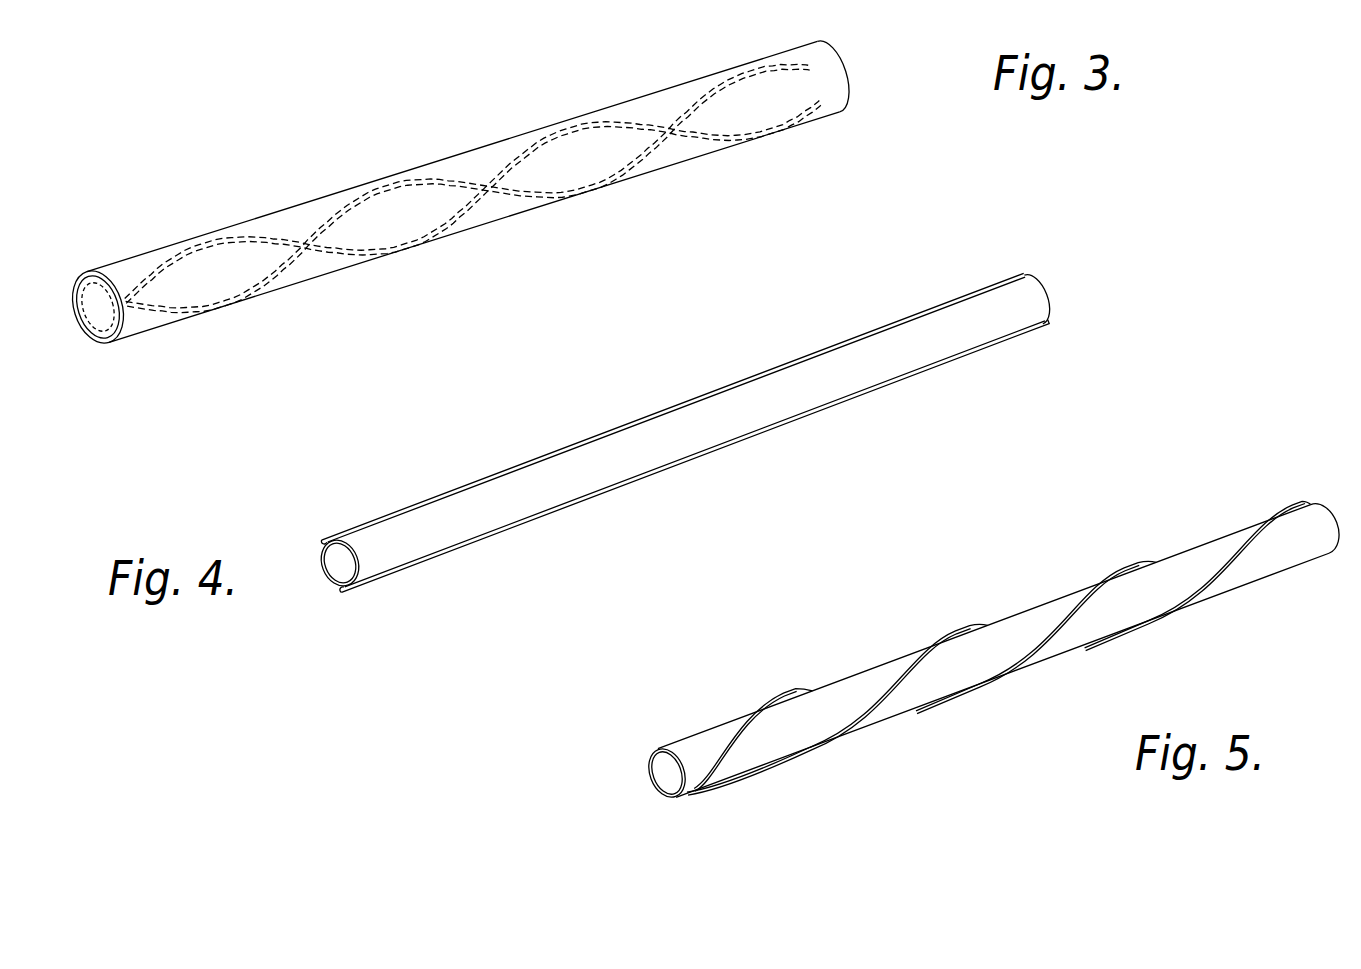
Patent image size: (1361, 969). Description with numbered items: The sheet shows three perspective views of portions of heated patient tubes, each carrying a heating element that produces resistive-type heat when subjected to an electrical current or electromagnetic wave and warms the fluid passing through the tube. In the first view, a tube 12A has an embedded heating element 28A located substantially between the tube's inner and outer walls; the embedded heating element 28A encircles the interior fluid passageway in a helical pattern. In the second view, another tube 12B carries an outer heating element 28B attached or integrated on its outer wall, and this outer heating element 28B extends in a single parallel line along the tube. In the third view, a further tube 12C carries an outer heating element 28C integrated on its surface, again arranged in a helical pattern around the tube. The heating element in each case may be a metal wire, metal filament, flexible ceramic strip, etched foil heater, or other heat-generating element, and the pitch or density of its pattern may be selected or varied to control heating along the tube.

In FIG. 3, the tube 12A is at (322, 150).
In FIG. 3, the embedded heating element 28A is at (557, 140).
In FIG. 4, the tube 12B is at (640, 397).
In FIG. 4, the outer heating element 28B is at (805, 358).
In FIG. 5, the tube 12C is at (940, 600).
In FIG. 5, the outer heating element 28C is at (757, 718).